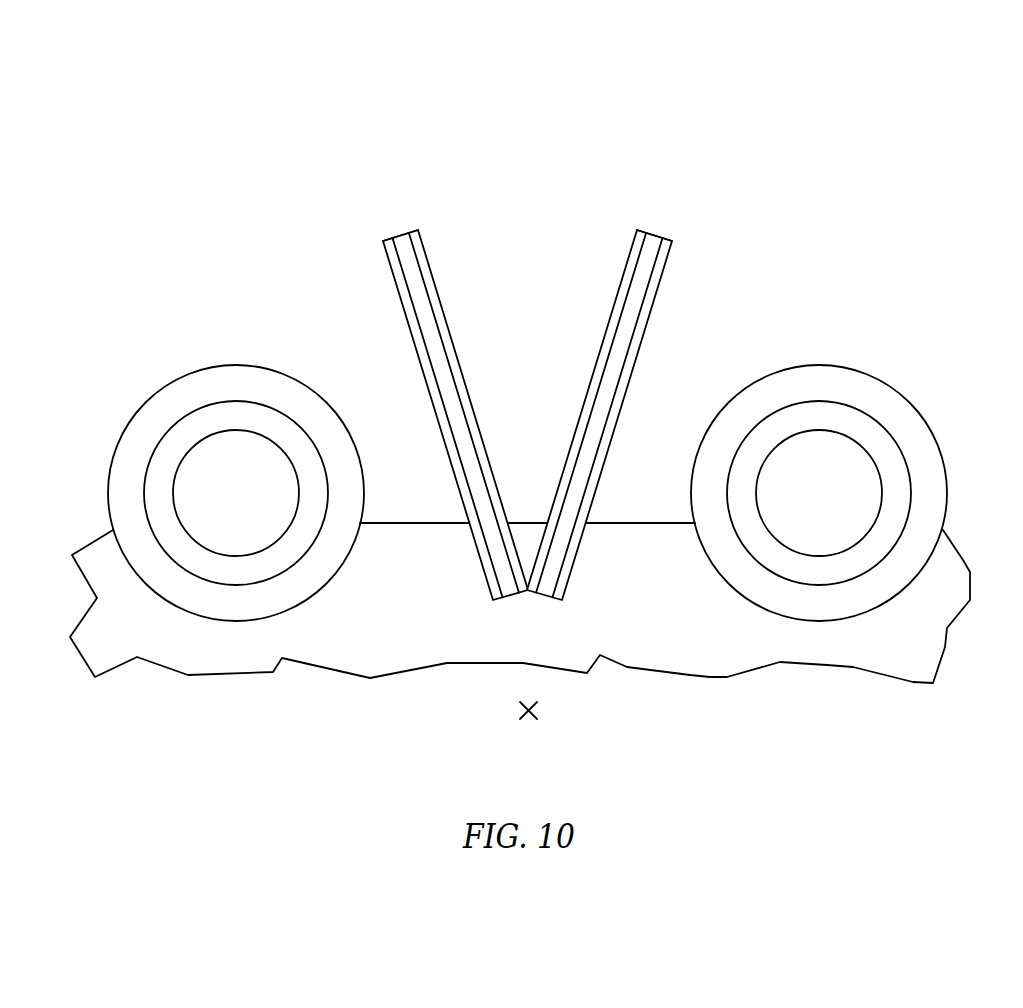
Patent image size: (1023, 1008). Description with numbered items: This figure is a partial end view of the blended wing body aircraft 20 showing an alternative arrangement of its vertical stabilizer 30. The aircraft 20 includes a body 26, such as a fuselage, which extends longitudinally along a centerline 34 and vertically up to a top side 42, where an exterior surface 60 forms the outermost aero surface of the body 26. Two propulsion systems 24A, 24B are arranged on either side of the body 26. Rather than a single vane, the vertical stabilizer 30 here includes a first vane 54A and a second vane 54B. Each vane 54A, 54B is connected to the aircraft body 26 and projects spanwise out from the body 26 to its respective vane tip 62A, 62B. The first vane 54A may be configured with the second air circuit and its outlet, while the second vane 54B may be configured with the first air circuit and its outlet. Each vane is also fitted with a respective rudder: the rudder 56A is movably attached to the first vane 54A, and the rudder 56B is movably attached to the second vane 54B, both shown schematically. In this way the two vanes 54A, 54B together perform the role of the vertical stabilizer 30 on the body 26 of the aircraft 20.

The blended wing body aircraft 20 is at (932, 150).
The propulsion system 24A is at (898, 377).
The propulsion system 24B is at (158, 375).
The body 26 is at (315, 680).
The vertical stabilizer 30 is at (542, 374).
The centerline 34 is at (532, 712).
The top side 42 is at (645, 523).
The first vane 54A is at (652, 378).
The second vane 54B is at (427, 379).
The rudder 56A is at (643, 323).
The rudder 56B is at (405, 305).
The exterior surface 60 is at (412, 523).
The vane tip 62A is at (658, 236).
The vane tip 62B is at (400, 235).